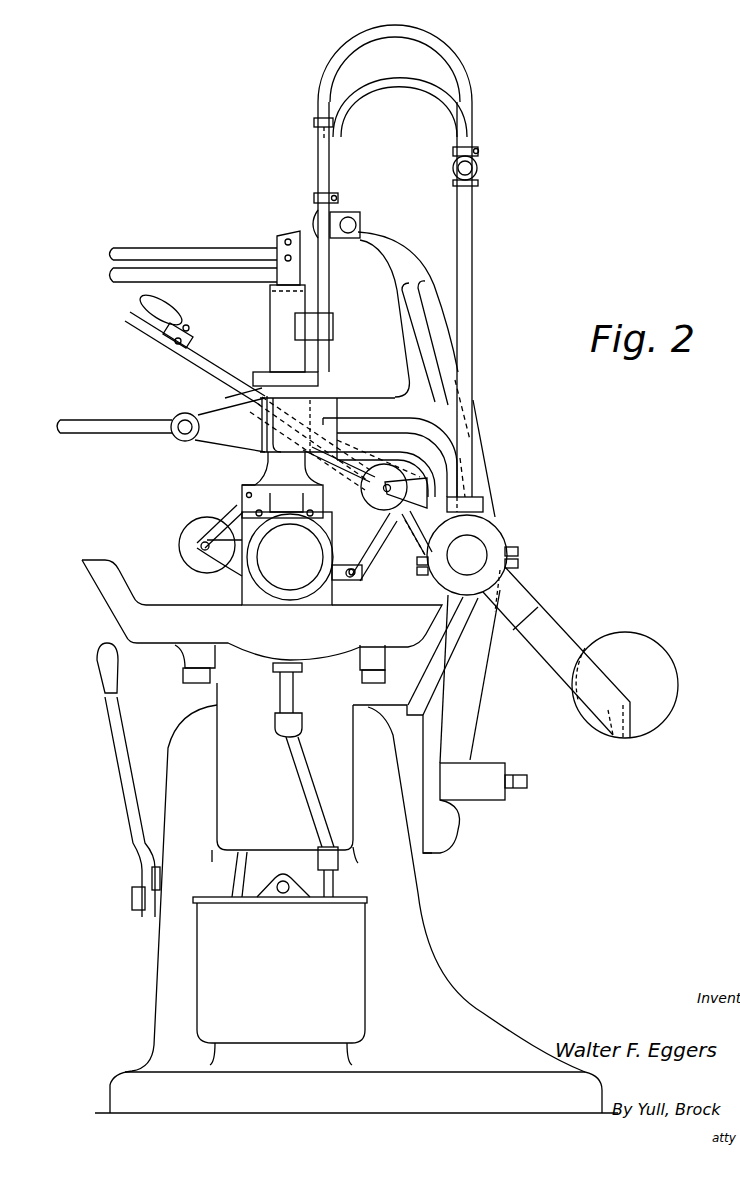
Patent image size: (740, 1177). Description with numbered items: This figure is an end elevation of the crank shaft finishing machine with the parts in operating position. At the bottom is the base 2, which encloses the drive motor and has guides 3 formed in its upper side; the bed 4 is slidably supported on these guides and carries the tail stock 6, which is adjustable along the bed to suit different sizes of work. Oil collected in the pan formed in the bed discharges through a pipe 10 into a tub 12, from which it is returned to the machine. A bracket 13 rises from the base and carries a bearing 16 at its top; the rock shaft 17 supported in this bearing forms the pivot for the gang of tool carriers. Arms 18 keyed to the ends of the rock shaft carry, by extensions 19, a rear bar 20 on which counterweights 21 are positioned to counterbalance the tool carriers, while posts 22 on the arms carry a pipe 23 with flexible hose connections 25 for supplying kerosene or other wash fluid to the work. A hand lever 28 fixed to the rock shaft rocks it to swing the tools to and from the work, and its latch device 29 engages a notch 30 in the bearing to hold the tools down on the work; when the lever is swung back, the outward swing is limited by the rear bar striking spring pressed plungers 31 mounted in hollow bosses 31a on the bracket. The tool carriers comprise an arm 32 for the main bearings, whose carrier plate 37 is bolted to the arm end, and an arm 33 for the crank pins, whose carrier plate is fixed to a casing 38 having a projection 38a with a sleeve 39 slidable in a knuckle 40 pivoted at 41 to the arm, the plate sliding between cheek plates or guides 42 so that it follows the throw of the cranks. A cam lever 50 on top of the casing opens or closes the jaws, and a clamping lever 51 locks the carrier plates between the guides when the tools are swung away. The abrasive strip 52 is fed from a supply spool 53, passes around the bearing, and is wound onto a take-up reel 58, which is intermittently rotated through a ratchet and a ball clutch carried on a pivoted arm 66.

The base 2 is at (408, 893).
The guides 3 is at (182, 676).
The bed 4 is at (262, 610).
The tail stock 6 is at (287, 558).
The pipe 10 is at (307, 785).
The tub 12 is at (280, 958).
The bracket 13 is at (453, 705).
The bearing 16 is at (443, 577).
The rock shaft 17 is at (467, 550).
The arms 18 is at (520, 597).
The extensions 19 is at (550, 652).
The rear bar 20 is at (630, 720).
The counterweights 21 is at (641, 642).
The posts 22 is at (463, 272).
The pipe 23 is at (478, 168).
The flexible pipe or hose connections 25 is at (455, 112).
The hand lever 28 is at (222, 356).
The latch device 29 is at (224, 398).
The notch 30 is at (465, 518).
The spring pressed plungers 31 is at (515, 775).
The hollow bosses 31a is at (488, 795).
The arm 32 is at (368, 410).
The arm 33 is at (441, 373).
The carrier plate 37 is at (274, 470).
The casing 38 is at (272, 300).
The projection 38a is at (335, 326).
The sleeve 39 is at (330, 270).
The knuckle 40 is at (338, 219).
The pivot 41 is at (370, 222).
The cheek plates or guides 42 is at (212, 437).
The cam lever 50 is at (190, 270).
The clamping lever 51 is at (122, 422).
The strip 52 is at (366, 552).
The supply spool 53 is at (368, 504).
The take-up reel 58 is at (181, 535).
The arm 66 is at (228, 512).